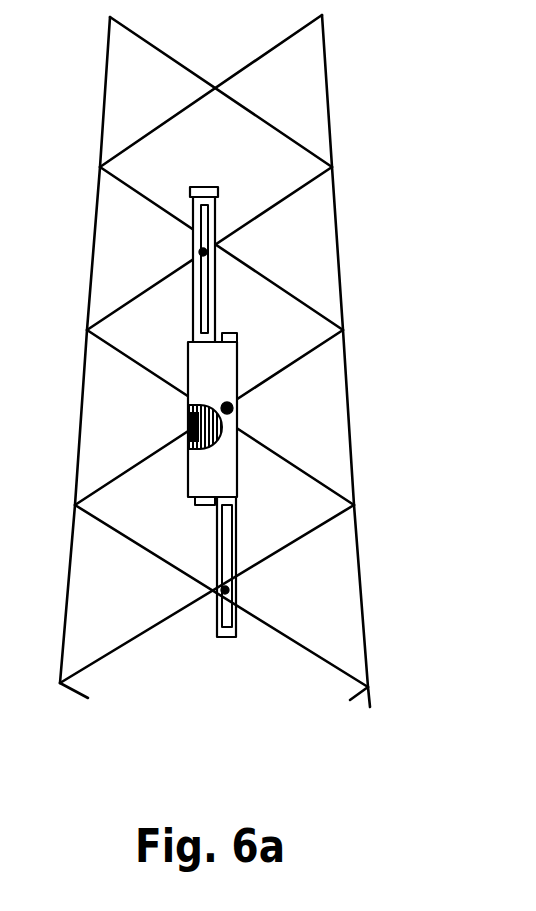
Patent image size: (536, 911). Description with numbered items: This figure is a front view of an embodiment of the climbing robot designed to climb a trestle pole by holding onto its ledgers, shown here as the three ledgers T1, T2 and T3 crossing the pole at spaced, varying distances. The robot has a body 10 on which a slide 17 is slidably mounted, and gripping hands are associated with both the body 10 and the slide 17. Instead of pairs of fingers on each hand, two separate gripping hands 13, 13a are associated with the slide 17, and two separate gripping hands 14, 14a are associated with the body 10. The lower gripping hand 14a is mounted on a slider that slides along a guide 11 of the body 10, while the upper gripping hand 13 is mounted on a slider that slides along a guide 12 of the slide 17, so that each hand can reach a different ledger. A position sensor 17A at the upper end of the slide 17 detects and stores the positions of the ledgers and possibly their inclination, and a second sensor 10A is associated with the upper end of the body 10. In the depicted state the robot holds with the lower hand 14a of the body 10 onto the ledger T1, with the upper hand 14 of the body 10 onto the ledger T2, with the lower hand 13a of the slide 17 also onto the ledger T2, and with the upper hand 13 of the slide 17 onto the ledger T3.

The body 10 is at (225, 463).
The second sensor 10A is at (237, 335).
The guide 11 is at (220, 620).
The guide 12 is at (205, 318).
The gripping hand 13 is at (203, 252).
The gripping hand 13a is at (188, 421).
The gripping hand 14 is at (233, 408).
The gripping hand 14a is at (231, 590).
The slide 17 is at (212, 293).
The position sensor 17A is at (210, 186).
The ledger T1 is at (312, 537).
The ledger T2 is at (297, 362).
The ledger T3 is at (137, 296).